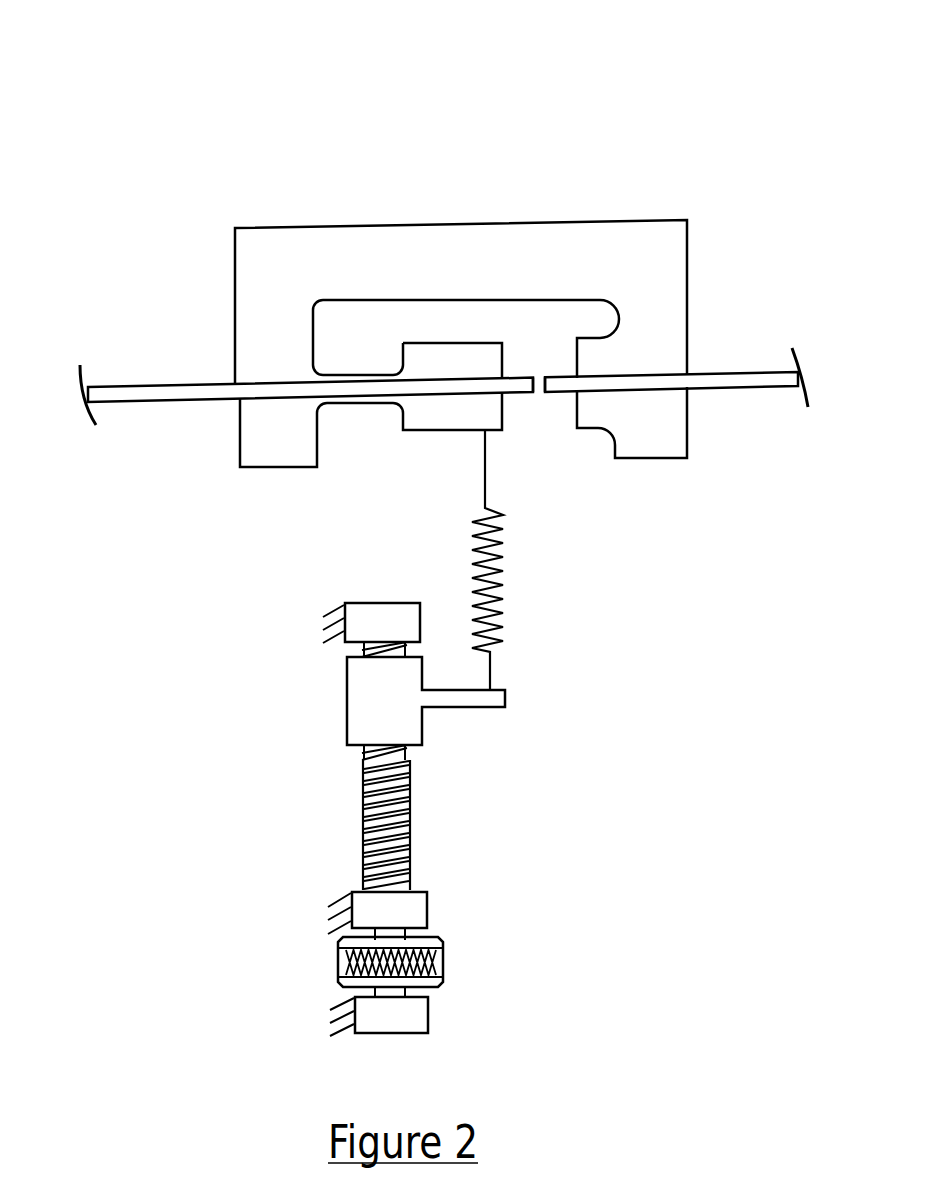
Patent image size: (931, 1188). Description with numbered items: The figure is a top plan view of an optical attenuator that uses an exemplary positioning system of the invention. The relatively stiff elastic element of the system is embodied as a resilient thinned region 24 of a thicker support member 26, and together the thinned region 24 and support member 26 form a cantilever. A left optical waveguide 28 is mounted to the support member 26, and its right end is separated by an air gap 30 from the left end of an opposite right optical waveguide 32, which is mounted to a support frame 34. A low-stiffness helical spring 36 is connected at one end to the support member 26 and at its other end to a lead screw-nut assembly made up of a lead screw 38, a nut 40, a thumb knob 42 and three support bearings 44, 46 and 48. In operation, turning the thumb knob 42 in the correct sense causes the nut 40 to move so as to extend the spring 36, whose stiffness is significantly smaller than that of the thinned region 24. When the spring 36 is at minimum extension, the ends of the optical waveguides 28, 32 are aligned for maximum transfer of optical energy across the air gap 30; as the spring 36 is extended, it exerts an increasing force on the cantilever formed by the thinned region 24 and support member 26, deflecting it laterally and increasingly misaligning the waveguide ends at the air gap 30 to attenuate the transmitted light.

The resilient thinned region 24 is at (358, 373).
The support member 26 is at (495, 343).
The left optical waveguide 28 is at (165, 385).
The air gap 30 is at (538, 360).
The right optical waveguide 32 is at (740, 370).
The support frame 34 is at (670, 222).
The low-stiffness helical spring 36 is at (502, 577).
The lead screw 38 is at (363, 827).
The nut 40 is at (307, 708).
The thumb knob 42 is at (338, 966).
The support bearing 44 is at (430, 1014).
The support bearing 46 is at (428, 909).
The support bearing 48 is at (378, 603).